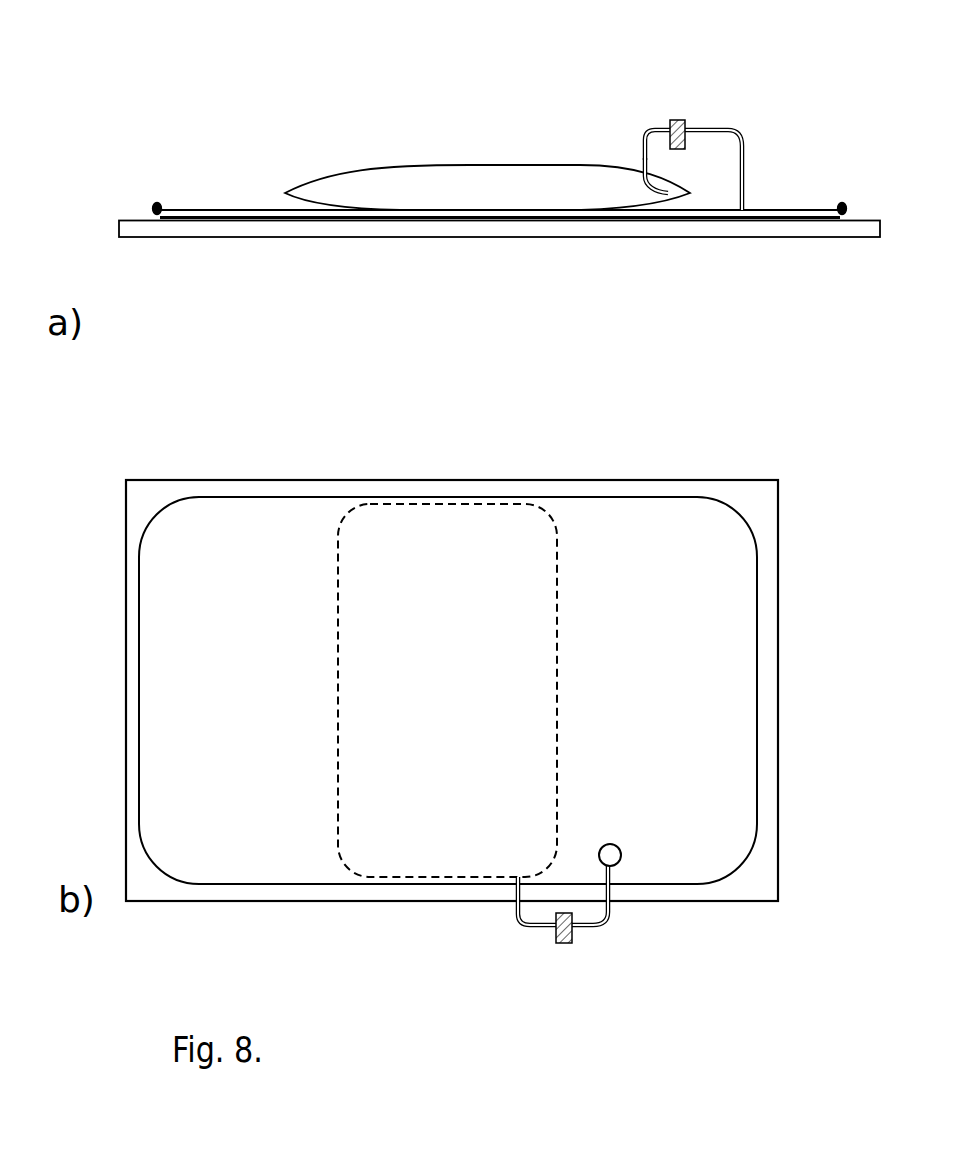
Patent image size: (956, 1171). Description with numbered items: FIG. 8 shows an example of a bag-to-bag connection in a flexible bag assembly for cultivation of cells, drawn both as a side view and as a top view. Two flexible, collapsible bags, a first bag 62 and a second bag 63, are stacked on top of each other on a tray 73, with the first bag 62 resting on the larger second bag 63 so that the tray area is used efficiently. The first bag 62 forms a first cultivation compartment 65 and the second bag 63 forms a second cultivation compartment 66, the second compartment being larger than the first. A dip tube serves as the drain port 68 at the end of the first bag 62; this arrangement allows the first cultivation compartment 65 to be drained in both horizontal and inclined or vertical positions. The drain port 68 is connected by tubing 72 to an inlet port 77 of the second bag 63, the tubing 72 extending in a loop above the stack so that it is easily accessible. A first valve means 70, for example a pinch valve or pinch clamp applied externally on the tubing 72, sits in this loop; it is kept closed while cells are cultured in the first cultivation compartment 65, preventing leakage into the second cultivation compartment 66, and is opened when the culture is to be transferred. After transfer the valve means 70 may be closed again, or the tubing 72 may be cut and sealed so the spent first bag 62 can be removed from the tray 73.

The bag 62 is at (397, 164).
The bag 63 is at (220, 210).
The first cultivation compartment 65 is at (487, 180).
The second cultivation compartment 66 is at (645, 562).
The drain port 68 is at (646, 178).
The first valve means 70 is at (670, 120).
The tubing 72 is at (710, 127).
The tray 73 is at (140, 218).
The inlet port 77 is at (744, 210).